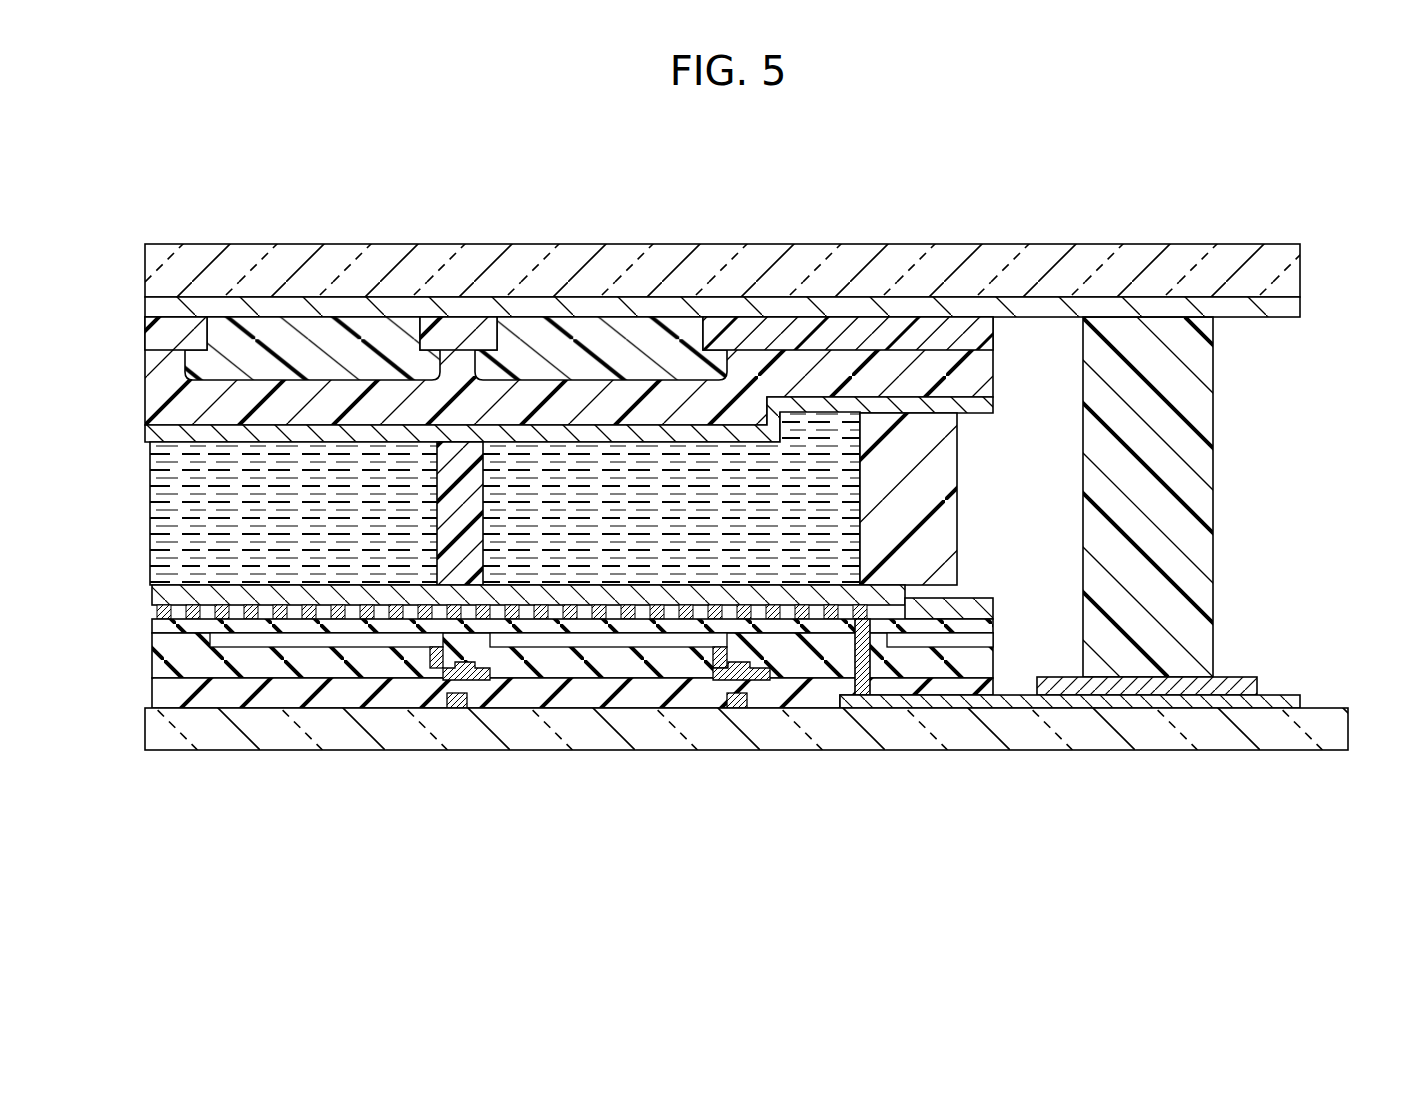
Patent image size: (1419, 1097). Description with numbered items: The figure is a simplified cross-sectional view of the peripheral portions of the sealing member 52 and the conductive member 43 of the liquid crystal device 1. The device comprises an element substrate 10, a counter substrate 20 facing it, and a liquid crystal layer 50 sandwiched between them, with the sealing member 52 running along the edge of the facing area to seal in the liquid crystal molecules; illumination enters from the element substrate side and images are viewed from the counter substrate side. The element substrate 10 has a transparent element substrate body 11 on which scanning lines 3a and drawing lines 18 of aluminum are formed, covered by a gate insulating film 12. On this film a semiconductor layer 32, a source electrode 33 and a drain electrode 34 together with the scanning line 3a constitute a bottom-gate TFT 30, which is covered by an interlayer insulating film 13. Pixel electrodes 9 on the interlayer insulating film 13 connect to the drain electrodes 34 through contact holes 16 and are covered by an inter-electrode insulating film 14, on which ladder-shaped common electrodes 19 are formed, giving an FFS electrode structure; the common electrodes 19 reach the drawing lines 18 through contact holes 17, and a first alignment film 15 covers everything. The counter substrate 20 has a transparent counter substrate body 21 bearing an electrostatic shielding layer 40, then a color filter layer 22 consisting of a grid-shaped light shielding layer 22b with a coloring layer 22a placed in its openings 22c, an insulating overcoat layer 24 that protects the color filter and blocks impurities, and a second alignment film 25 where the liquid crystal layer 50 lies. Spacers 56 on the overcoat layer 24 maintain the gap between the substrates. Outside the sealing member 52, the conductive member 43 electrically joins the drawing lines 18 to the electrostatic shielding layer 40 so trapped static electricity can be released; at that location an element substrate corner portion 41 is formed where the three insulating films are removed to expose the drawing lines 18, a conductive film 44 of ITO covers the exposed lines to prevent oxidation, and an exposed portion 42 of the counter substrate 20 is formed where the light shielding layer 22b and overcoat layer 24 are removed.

The liquid crystal device 1 is at (1300, 178).
The scanning line 3a is at (733, 710).
The pixel electrode 9 is at (278, 640).
The element substrate 10 is at (739, 707).
The element substrate body 11 is at (1335, 730).
The gate insulating film 12 is at (990, 678).
The interlayer insulating film 13 is at (614, 719).
The inter-electrode insulating film 14 is at (990, 625).
The first alignment film 15 is at (180, 585).
The contact hole 16 is at (432, 663).
The contact hole 17 is at (862, 695).
The drawing line 18 is at (1293, 702).
The common electrode 19 is at (208, 612).
The counter substrate 20 is at (723, 298).
The counter substrate body 21 is at (1293, 278).
The color filter layer 22 is at (568, 251).
The coloring layer 22a is at (232, 330).
The light shielding layer 22b is at (180, 330).
The opening 22c is at (700, 333).
The overcoat layer 24 is at (328, 397).
The second alignment film 25 is at (526, 436).
The TFT 30 is at (554, 758).
The semiconductor layer 32 is at (455, 710).
The source electrode 33 is at (478, 683).
The drain electrode 34 is at (438, 668).
The electrostatic shielding layer 40 is at (1293, 308).
The element substrate corner portion 41 is at (1348, 764).
The exposed portion 42 is at (1089, 438).
The conductive member 43 is at (1200, 450).
The conductive film 44 is at (1257, 680).
The liquid crystal layer 50 is at (165, 518).
The sealing member 52 is at (952, 466).
The spacer 56 is at (443, 480).